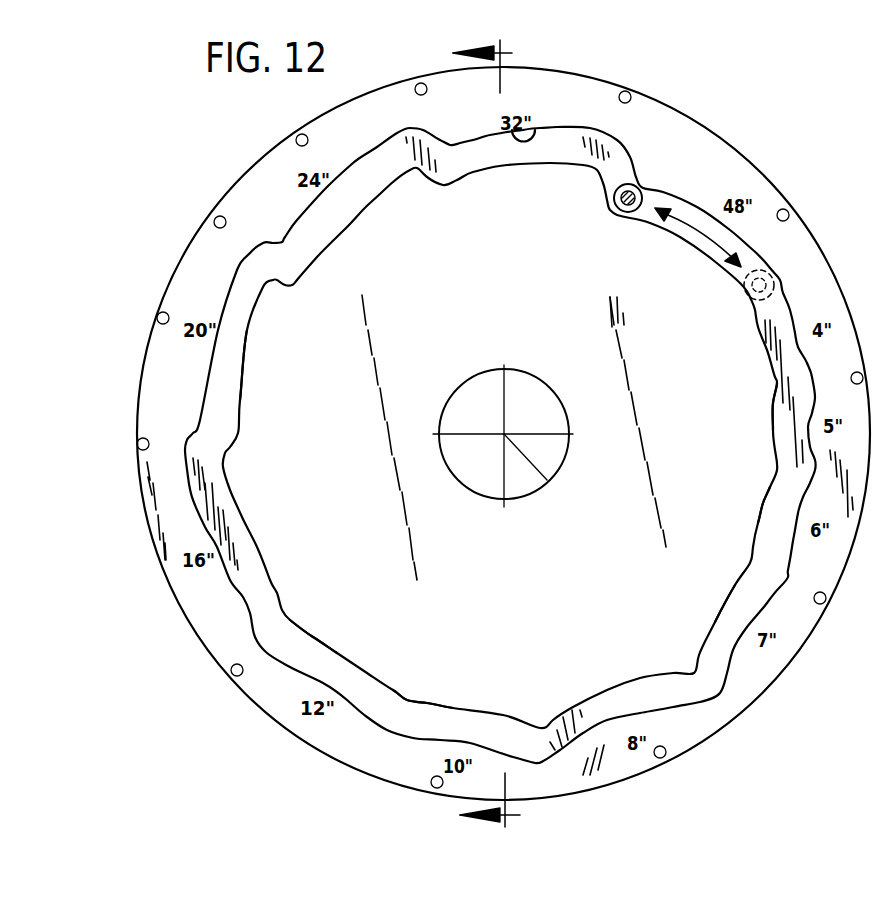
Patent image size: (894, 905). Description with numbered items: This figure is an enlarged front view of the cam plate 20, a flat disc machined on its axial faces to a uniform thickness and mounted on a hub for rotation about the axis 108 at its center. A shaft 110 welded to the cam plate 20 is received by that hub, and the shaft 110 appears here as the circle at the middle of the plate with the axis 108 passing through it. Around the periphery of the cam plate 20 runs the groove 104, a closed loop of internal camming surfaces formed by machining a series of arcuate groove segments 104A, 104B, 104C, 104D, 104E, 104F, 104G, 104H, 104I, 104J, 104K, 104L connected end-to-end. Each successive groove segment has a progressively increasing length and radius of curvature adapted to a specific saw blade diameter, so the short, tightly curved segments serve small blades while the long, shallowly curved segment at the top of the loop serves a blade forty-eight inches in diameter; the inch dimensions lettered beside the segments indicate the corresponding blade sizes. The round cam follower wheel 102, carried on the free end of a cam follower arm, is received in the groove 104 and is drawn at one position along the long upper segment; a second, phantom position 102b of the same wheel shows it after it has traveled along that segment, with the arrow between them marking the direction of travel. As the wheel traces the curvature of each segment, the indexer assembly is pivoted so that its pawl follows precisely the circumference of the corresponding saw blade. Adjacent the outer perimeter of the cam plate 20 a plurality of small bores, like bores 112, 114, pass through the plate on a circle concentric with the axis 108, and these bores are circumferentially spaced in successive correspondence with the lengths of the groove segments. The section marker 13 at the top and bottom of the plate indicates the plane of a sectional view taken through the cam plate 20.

The cam plate 20 is at (237, 179).
The bore 114 is at (163, 312).
The bore 112 is at (150, 441).
The groove 104 is at (534, 130).
The cam follower wheel 102 is at (642, 193).
The locating pin (alternate position) 102b is at (786, 293).
The groove segment 104A is at (767, 353).
The groove segment 104B is at (778, 425).
The groove segment 104C is at (765, 511).
The groove segment 104D is at (722, 612).
The groove segment 104E is at (614, 693).
The groove segment 104F is at (461, 709).
The groove segment 104G is at (337, 661).
The groove segment 104H is at (240, 523).
The groove segment 104I is at (245, 364).
The groove segment 104J is at (347, 220).
The groove segment 104K is at (523, 161).
The groove segment 104L is at (700, 249).
The shaft 110 is at (533, 378).
The axis 108 is at (547, 480).
The section line 13- 13 is at (499, 438).